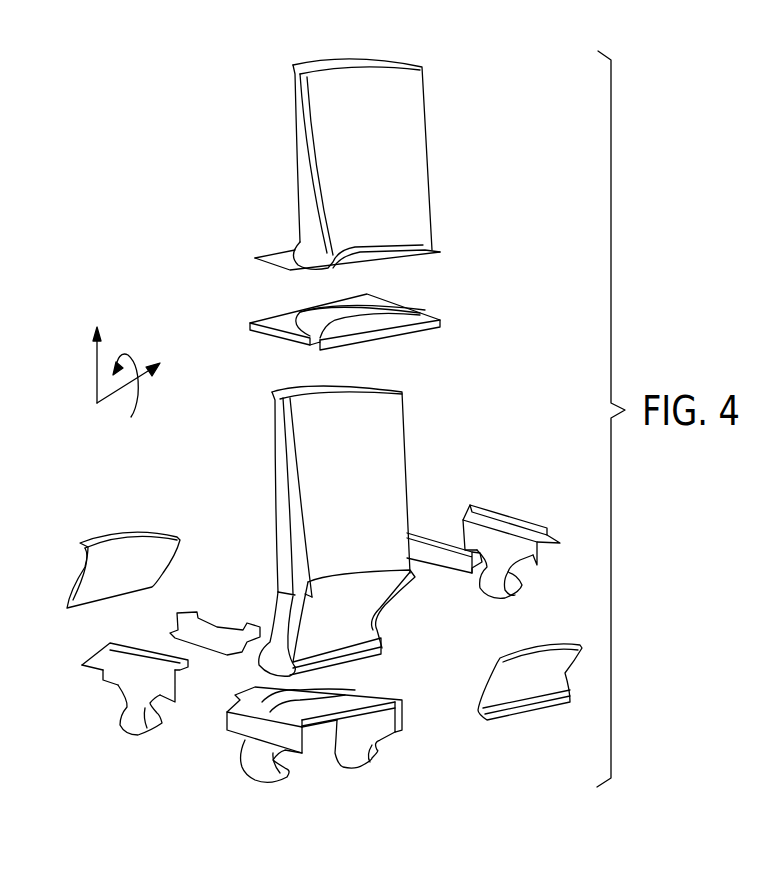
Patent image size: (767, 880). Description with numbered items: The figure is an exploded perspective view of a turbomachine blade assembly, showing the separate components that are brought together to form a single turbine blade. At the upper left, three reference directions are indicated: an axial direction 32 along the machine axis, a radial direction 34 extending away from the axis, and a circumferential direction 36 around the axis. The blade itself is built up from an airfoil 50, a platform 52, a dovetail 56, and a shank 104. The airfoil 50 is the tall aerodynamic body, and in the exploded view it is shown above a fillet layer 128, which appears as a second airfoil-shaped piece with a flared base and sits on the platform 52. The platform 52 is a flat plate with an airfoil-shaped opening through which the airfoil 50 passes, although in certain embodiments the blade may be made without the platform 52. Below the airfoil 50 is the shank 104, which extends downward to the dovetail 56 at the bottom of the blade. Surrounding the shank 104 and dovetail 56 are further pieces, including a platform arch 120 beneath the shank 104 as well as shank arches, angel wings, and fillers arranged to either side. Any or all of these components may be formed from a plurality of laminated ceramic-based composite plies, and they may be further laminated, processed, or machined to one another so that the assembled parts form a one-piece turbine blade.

The axial direction 32 is at (140, 382).
The radial direction 34 is at (95, 372).
The circumferential direction 36 is at (135, 408).
The airfoil 50 is at (385, 455).
The platform 52 is at (283, 322).
The dovetail 56 is at (348, 652).
The shank 104 is at (355, 600).
The platform arch 120 is at (353, 695).
The fillet layer 128 is at (412, 157).